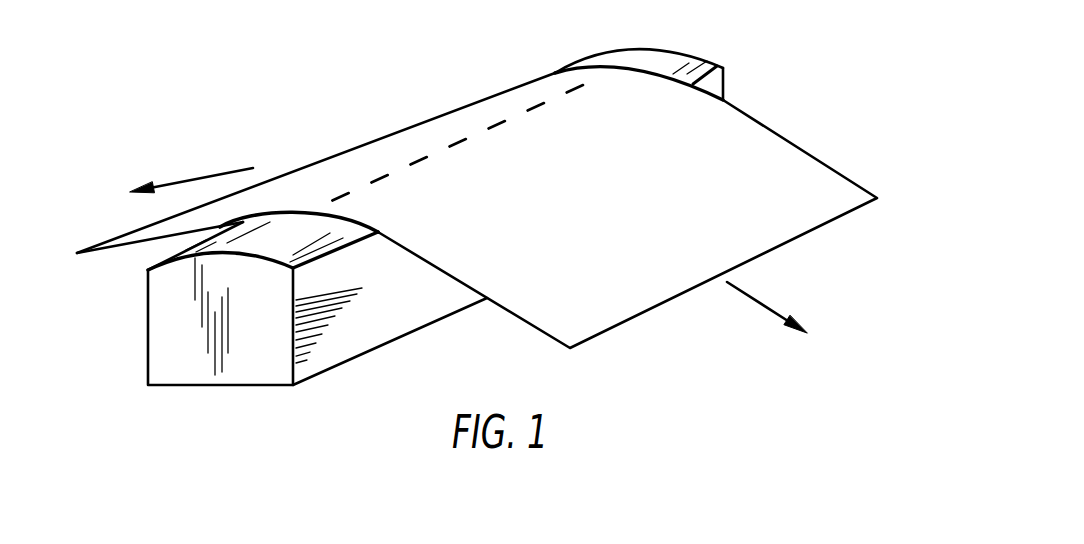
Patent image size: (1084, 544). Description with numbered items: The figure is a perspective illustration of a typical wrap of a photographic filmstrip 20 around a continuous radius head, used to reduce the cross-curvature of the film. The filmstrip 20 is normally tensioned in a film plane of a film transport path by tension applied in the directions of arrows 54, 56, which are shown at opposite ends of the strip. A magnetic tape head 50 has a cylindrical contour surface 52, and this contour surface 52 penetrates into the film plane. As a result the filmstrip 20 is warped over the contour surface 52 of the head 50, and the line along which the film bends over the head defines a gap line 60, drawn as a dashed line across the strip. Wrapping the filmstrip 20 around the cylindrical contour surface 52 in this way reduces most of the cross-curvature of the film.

The photographic filmstrip 20 is at (817, 182).
The magnetic tape head 50 is at (291, 303).
The contour surface 52 is at (262, 246).
The arrow 54 is at (763, 302).
The arrow 56 is at (186, 180).
The gap line 60 is at (493, 127).